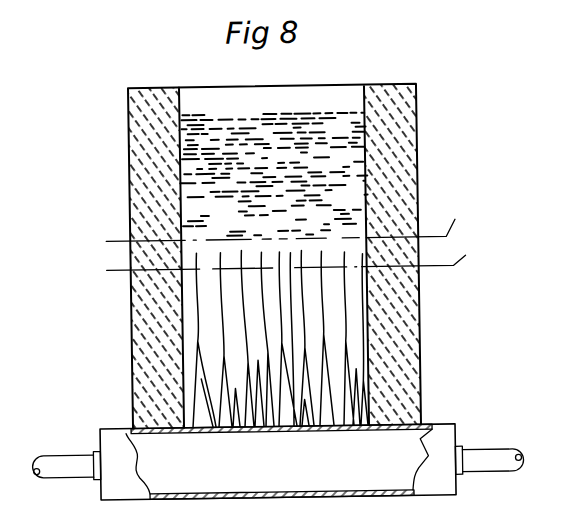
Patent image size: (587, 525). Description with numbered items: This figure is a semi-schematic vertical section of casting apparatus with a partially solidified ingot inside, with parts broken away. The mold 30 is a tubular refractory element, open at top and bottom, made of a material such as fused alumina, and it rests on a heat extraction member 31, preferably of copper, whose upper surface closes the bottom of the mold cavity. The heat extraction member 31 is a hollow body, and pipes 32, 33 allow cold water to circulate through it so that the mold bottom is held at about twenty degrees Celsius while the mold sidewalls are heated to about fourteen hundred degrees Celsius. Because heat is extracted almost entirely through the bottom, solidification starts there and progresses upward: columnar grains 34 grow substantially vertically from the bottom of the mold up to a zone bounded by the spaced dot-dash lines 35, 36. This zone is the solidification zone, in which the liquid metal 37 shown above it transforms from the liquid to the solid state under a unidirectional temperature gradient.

The mold 30 is at (408, 186).
The heat extraction member 31 is at (433, 425).
The pipe 32 is at (43, 459).
The pipe 33 is at (498, 455).
The columnar grains 34 is at (336, 283).
The dot-dash line 35 is at (292, 220).
The dot-dash line 36 is at (299, 253).
The liquid metal 37 is at (305, 121).